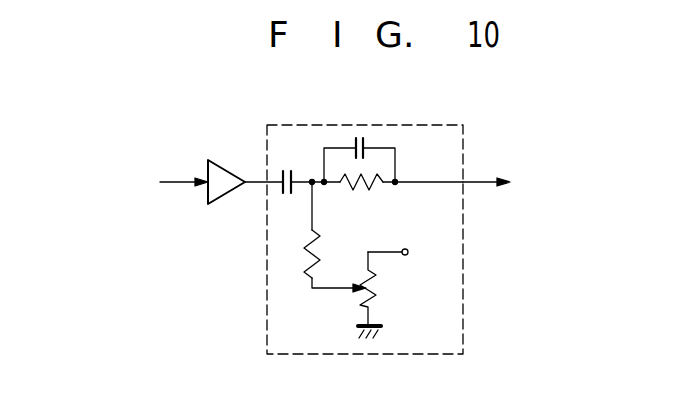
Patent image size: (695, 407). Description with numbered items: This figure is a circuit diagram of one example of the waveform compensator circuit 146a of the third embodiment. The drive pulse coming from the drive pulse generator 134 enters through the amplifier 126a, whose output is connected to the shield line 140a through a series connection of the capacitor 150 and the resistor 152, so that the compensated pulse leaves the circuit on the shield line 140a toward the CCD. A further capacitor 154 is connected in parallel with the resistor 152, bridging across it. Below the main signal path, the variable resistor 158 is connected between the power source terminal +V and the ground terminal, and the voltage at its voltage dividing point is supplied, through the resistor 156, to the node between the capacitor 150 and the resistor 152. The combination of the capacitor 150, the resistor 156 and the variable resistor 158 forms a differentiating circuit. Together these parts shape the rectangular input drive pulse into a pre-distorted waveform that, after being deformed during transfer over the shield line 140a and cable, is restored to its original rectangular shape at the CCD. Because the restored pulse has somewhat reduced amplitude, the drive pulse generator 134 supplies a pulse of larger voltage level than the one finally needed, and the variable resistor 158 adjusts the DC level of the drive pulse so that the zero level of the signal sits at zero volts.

The amplifier 126a is at (228, 160).
The drive pulse generator 134 is at (112, 191).
The shield line 140a is at (555, 184).
The waveform compensator circuit 146a is at (410, 125).
The capacitor 150 is at (301, 200).
The resistor 152 is at (344, 188).
The capacitor 154 is at (374, 147).
The resistor 156 is at (310, 268).
The variable resistor 158 is at (374, 272).